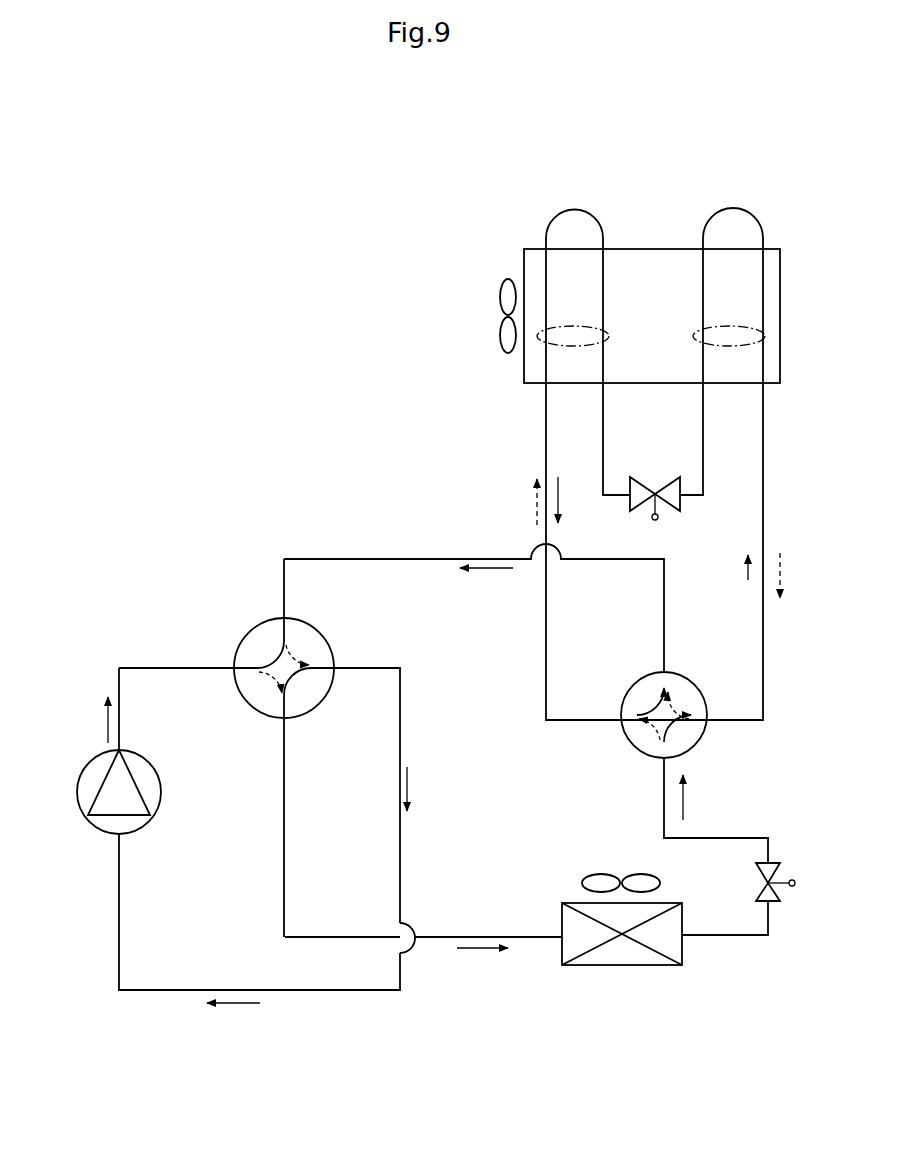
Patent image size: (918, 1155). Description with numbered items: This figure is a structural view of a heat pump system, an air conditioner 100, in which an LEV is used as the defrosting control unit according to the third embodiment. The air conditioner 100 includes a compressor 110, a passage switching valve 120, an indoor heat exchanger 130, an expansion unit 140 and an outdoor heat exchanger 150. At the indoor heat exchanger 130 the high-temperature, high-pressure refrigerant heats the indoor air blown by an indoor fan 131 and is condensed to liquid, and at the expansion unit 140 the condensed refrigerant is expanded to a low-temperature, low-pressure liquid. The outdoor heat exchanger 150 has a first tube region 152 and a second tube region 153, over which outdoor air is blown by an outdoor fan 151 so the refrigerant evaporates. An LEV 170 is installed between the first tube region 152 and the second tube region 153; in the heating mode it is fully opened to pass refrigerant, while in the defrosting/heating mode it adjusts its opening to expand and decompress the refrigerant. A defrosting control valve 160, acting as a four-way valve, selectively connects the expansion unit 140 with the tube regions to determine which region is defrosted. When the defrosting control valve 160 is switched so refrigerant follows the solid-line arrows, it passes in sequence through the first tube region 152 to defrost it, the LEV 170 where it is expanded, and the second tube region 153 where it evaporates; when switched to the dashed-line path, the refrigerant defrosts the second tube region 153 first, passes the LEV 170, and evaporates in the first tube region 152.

The air conditioner 100 is at (250, 238).
The compressor 110 is at (95, 770).
The passage switching valve 120 is at (252, 637).
The indoor heat exchanger 130 is at (628, 953).
The indoor fan 131 is at (601, 878).
The expansion unit 140 is at (776, 862).
The outdoor heat exchanger 150 is at (780, 330).
The outdoor fan 151 is at (500, 332).
The first tube region 152 is at (728, 328).
The second tube region 153 is at (571, 328).
The defrosting control valve 160 is at (700, 745).
The LEV 170 is at (681, 500).